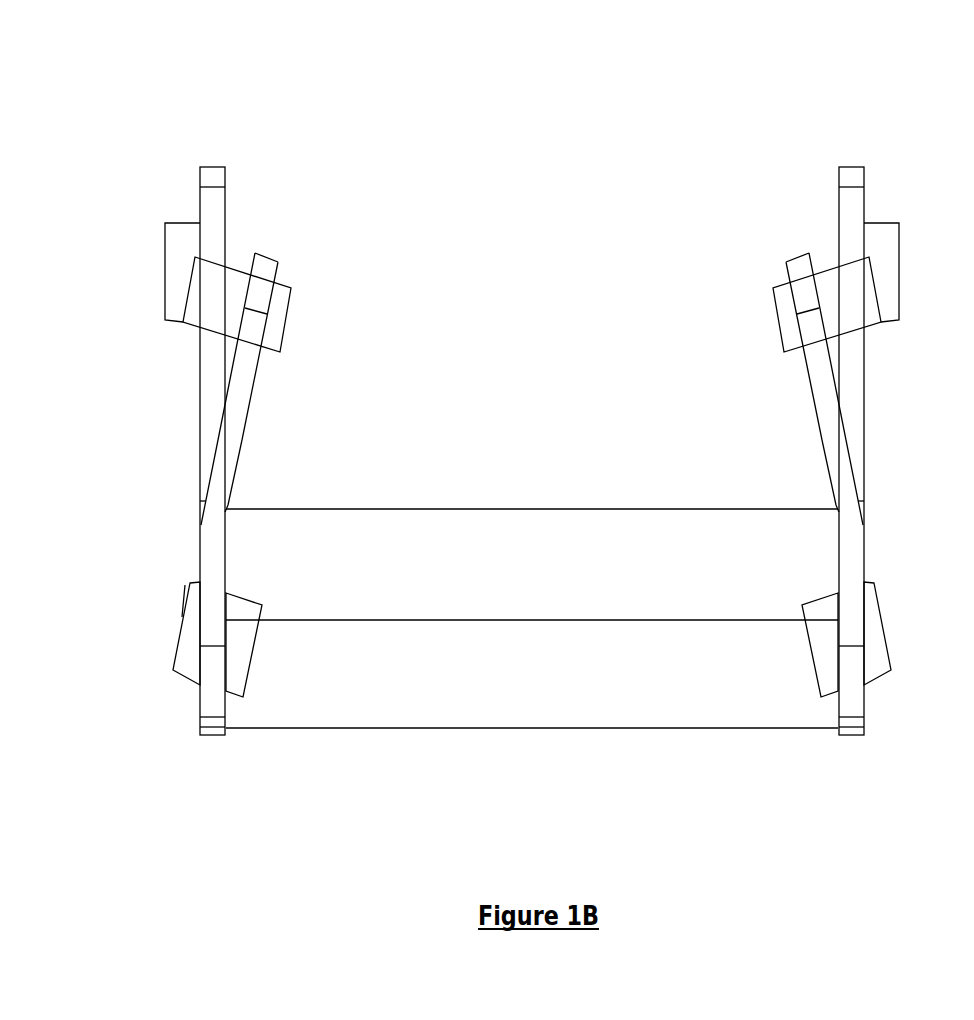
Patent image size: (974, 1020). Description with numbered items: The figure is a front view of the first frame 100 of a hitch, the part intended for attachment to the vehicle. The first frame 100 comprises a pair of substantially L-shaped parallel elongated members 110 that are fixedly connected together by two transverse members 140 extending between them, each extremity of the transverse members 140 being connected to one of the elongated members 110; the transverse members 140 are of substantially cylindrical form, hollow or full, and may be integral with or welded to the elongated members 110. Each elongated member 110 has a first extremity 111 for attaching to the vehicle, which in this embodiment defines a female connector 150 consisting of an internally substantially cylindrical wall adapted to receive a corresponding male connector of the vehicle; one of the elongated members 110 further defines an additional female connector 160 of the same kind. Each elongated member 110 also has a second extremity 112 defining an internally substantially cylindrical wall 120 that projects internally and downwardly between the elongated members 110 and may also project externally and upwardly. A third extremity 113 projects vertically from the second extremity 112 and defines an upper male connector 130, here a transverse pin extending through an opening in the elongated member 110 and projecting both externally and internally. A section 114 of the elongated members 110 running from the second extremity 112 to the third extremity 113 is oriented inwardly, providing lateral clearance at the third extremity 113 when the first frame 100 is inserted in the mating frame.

The first frame 100 is at (552, 36).
The elongated member 110 is at (200, 422).
The first extremity 111 is at (226, 218).
The second extremity 112 is at (198, 732).
The third extremity 113 is at (283, 267).
The section 114 is at (238, 472).
The cylindrical wall 120 is at (250, 665).
The upper male connector 130 is at (233, 308).
The transverse member 140 is at (534, 566).
The female connector 150 is at (163, 302).
The additional female connector 160 is at (183, 620).